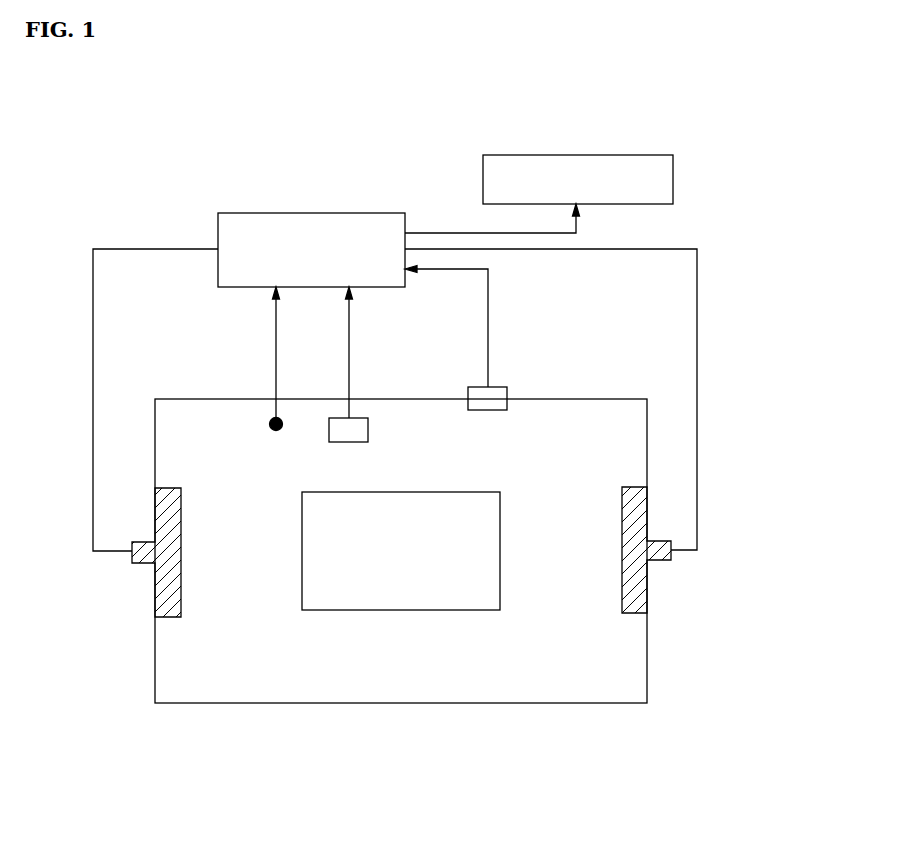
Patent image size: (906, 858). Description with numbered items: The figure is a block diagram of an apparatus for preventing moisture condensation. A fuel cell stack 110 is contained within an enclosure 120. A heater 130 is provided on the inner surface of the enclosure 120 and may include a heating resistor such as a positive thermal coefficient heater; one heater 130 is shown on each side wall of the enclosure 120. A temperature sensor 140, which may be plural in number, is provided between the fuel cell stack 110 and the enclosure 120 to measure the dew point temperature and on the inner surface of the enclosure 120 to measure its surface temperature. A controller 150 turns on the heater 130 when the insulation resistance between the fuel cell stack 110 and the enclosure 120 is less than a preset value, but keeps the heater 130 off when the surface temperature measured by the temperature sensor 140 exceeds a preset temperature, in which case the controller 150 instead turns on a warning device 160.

The fuel cell stack 110 is at (403, 610).
The enclosure 120 is at (582, 703).
The heater 130 is at (165, 600).
The temperature sensor 140 is at (357, 418).
The controller 150 is at (312, 213).
The warning device 160 is at (673, 176).